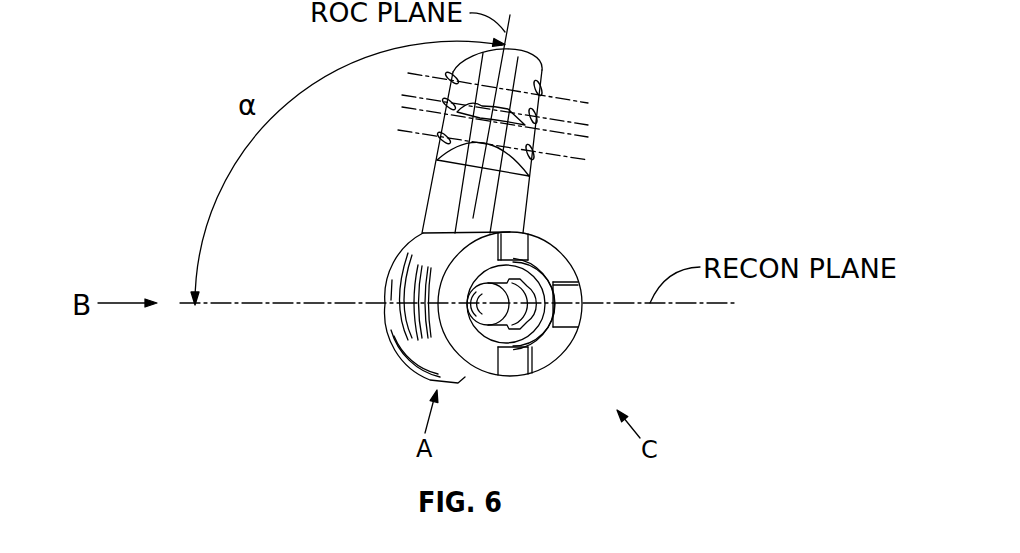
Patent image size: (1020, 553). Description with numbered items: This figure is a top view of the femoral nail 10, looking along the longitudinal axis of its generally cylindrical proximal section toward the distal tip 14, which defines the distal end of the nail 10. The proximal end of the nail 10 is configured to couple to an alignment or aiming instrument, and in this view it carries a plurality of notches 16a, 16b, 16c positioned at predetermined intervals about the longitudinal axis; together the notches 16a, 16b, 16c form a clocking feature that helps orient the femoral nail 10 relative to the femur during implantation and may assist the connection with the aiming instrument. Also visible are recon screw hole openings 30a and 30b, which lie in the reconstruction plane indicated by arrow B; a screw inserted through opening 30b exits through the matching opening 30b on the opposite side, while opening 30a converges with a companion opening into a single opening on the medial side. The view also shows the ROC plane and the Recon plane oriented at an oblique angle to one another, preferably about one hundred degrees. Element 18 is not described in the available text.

The femoral nail 10 is at (125, 36).
The distal tip 14 is at (510, 55).
The notch 16a is at (517, 363).
The notch 16b is at (563, 317).
The notch 16c is at (522, 240).
The ring 18 is at (550, 270).
The opening 30a is at (397, 322).
The opening 30b is at (405, 293).